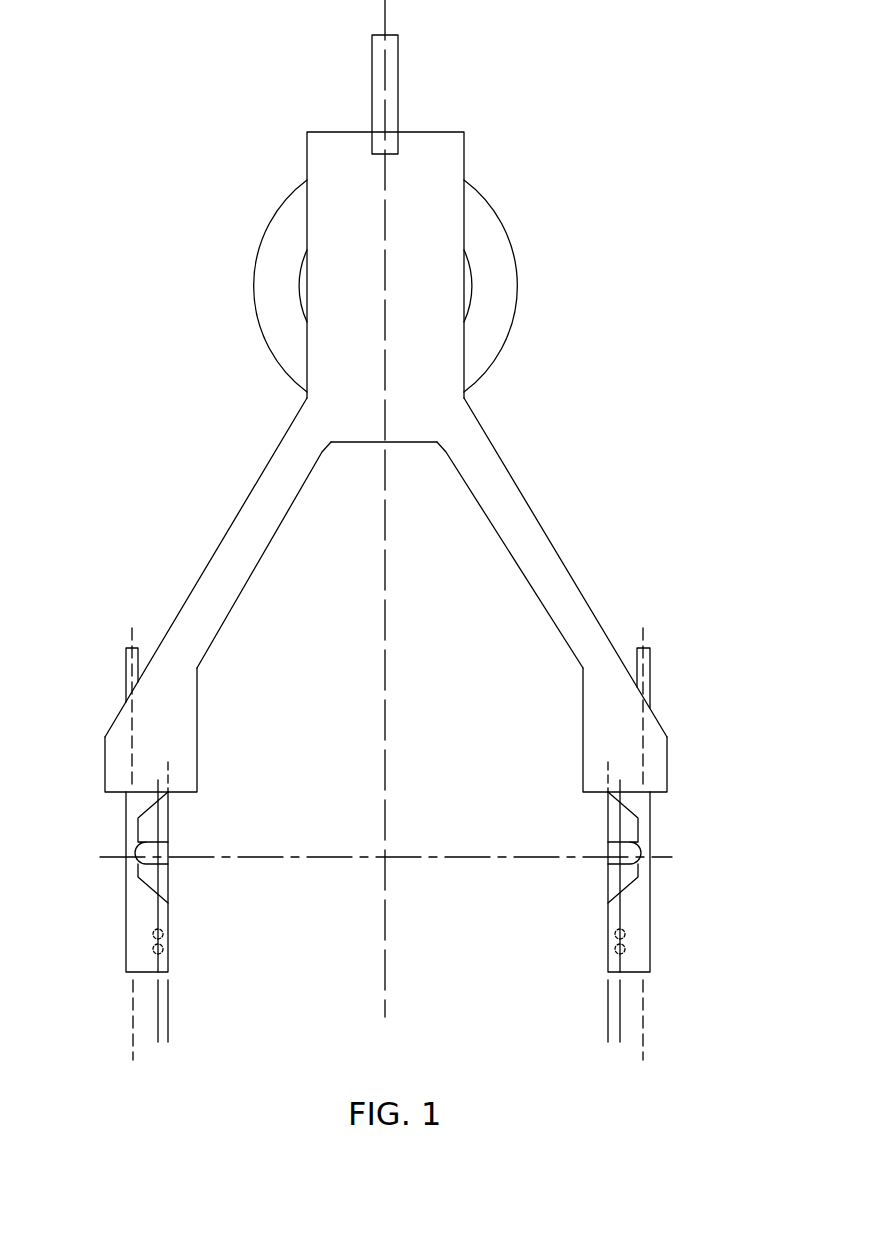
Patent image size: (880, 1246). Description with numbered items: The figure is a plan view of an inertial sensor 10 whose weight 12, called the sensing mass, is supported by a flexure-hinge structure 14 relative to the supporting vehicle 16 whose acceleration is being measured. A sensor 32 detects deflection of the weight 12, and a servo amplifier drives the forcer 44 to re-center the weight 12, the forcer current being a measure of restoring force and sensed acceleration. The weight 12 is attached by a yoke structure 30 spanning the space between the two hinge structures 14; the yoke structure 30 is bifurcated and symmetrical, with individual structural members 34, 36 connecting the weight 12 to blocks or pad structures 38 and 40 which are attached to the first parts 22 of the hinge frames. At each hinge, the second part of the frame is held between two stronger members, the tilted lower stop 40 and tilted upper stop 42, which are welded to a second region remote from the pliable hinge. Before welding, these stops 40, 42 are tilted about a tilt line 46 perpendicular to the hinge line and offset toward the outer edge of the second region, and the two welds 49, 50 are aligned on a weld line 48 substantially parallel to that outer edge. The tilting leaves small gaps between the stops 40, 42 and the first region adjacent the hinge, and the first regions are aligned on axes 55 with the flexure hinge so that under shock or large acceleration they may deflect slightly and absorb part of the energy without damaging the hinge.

The inertial sensor 10 is at (521, 182).
The weight (sensing mass) 12 is at (397, 225).
The flexure-hinge assembly 14 is at (120, 852).
The supporting vehicle 16 is at (431, 1028).
The first part of hinge frame 22 is at (130, 655).
The yoke structure 30 is at (430, 650).
The sensor 32 is at (388, 24).
The structural member 34 is at (220, 590).
The structural member 36 is at (573, 610).
The block or pad structure 38 is at (160, 767).
The tilted lower stop 40 is at (634, 748).
The tilted upper stop 42 is at (138, 890).
The forcer 44 is at (487, 262).
The tilt line 46 is at (168, 1014).
The weld line 48 is at (160, 1048).
The weld 49 is at (157, 958).
The weld 50 is at (157, 931).
The axis 55 is at (134, 1045).